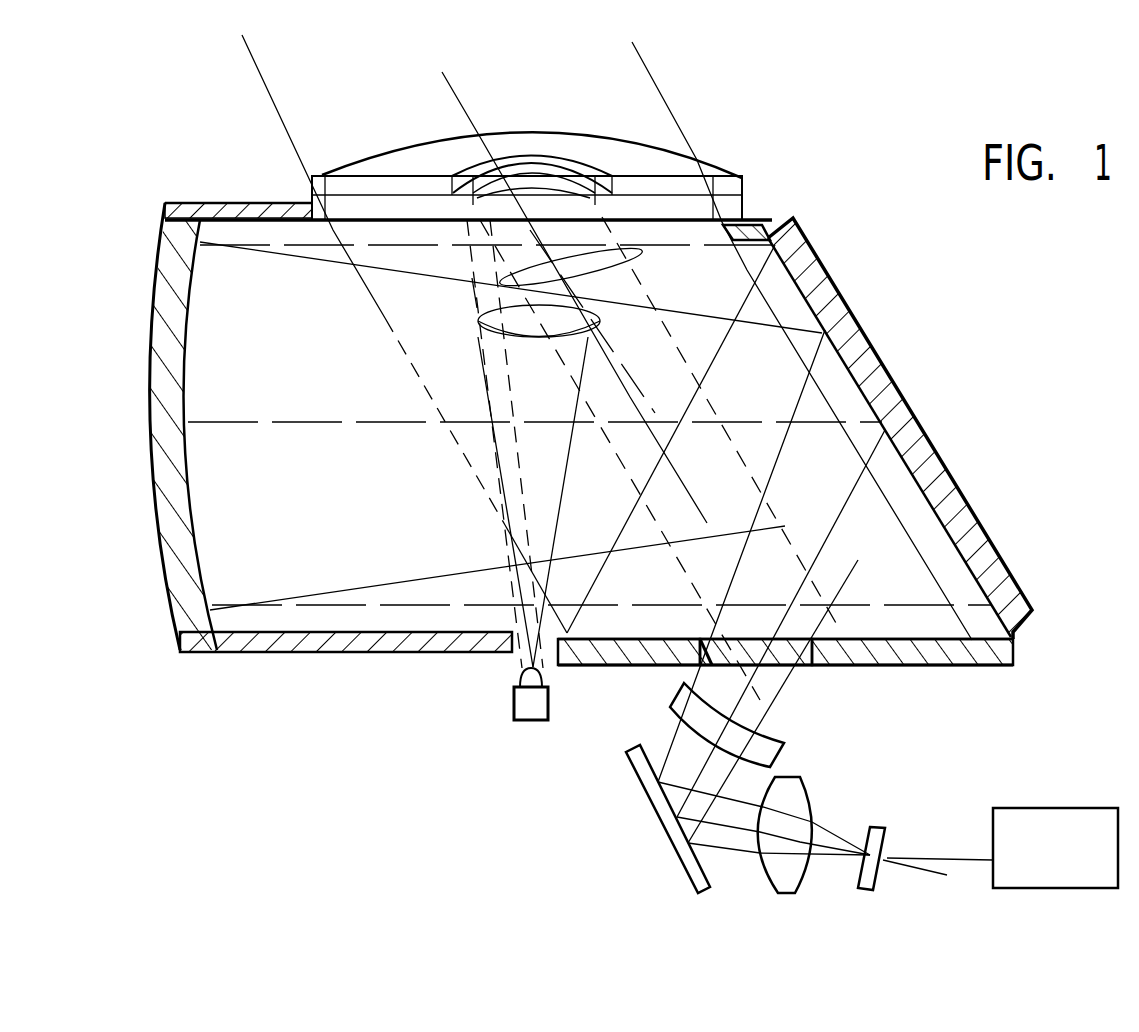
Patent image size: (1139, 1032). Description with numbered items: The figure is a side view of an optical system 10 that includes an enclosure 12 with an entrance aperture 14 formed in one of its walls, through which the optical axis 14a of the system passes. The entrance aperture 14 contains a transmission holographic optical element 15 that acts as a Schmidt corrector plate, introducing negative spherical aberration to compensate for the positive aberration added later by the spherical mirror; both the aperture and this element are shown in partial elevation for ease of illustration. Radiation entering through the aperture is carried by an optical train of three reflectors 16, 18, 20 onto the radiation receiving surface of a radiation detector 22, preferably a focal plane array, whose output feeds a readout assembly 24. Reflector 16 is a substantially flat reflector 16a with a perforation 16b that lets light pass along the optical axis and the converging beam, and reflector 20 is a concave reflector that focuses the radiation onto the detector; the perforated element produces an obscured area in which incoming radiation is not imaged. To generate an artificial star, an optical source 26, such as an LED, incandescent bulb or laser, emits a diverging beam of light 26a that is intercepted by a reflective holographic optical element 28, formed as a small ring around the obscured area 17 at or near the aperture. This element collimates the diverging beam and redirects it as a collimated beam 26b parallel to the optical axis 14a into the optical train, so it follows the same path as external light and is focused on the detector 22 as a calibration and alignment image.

The optical system 10 is at (936, 290).
The enclosure 12 is at (982, 543).
The entrance aperture 14 is at (637, 152).
The optical axis 14a is at (615, 376).
The holographic optical element 15 is at (735, 210).
The reflector 16 is at (958, 634).
The flat reflector 16a is at (627, 655).
The perforation 16b is at (805, 657).
The obscured area 17 is at (547, 170).
The reflector 18 is at (903, 393).
The concave reflector 20 is at (152, 437).
The radiation detector 22 is at (885, 835).
The readout assembly 24 is at (1035, 812).
The optical source 26 is at (514, 718).
The diverging beam of light 26a is at (487, 337).
The collimated beam 26b is at (632, 273).
The holographic optical element 28 is at (508, 165).